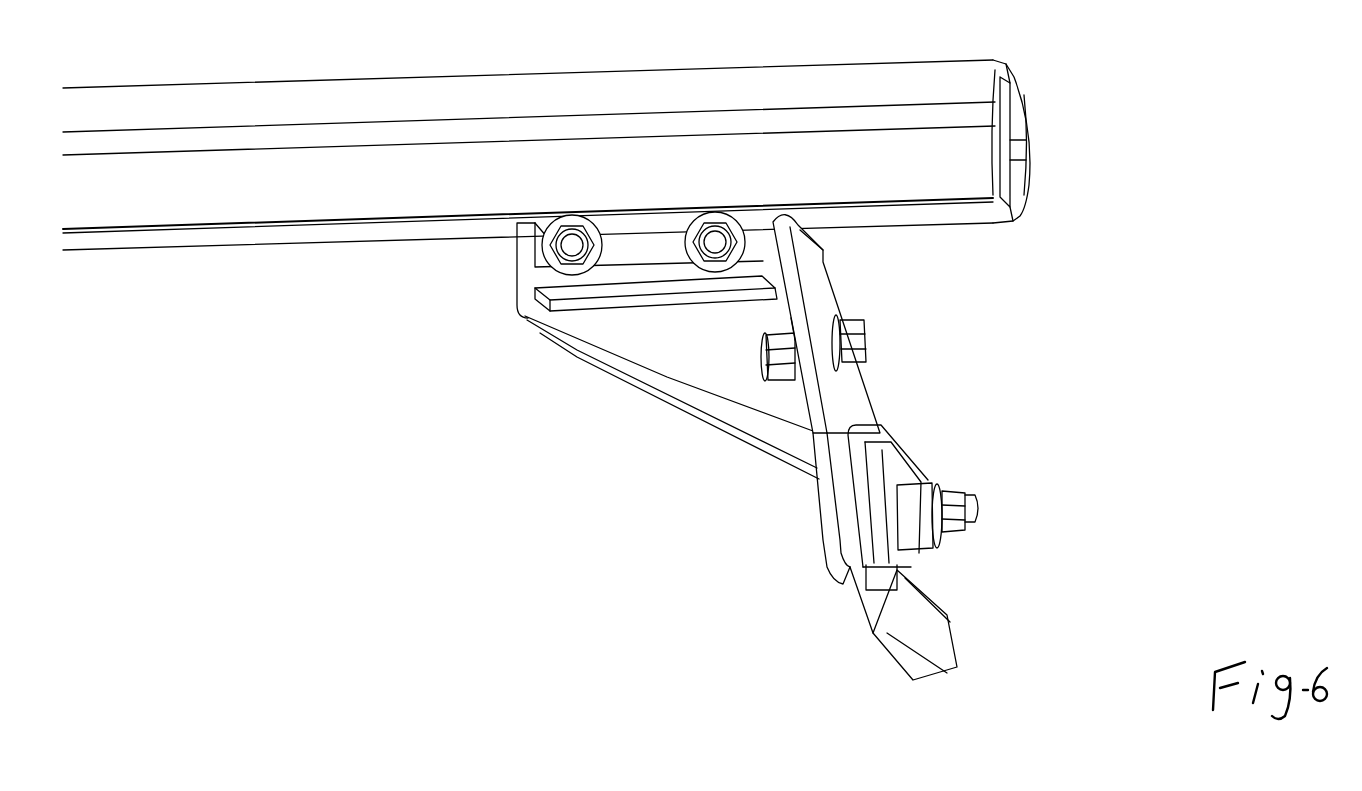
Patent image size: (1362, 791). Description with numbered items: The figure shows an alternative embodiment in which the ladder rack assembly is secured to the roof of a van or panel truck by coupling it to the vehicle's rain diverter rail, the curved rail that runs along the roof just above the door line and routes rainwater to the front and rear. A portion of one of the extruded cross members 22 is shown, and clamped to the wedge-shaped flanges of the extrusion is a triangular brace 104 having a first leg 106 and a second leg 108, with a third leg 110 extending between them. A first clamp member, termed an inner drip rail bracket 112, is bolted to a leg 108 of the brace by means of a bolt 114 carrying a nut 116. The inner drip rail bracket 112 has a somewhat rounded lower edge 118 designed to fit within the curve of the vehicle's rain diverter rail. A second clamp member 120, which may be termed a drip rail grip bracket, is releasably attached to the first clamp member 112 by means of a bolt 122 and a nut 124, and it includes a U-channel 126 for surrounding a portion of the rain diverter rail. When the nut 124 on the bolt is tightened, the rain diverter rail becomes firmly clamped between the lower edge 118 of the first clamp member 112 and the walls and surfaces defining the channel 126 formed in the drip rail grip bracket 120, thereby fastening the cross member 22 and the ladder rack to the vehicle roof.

The extruded cross member 22 is at (546, 125).
The triangular brace 104 is at (770, 470).
The first leg 106 is at (601, 288).
The second leg 108 is at (741, 419).
The third leg 110 is at (668, 397).
The inner drip rail bracket 112 is at (808, 368).
The bolt 114 is at (896, 332).
The nut 116 is at (780, 377).
The lower edge 118 is at (841, 561).
The second clamp member 120 is at (928, 482).
The bolt 122 is at (1040, 484).
The nut 124 is at (973, 488).
The U-channel 126 is at (914, 649).